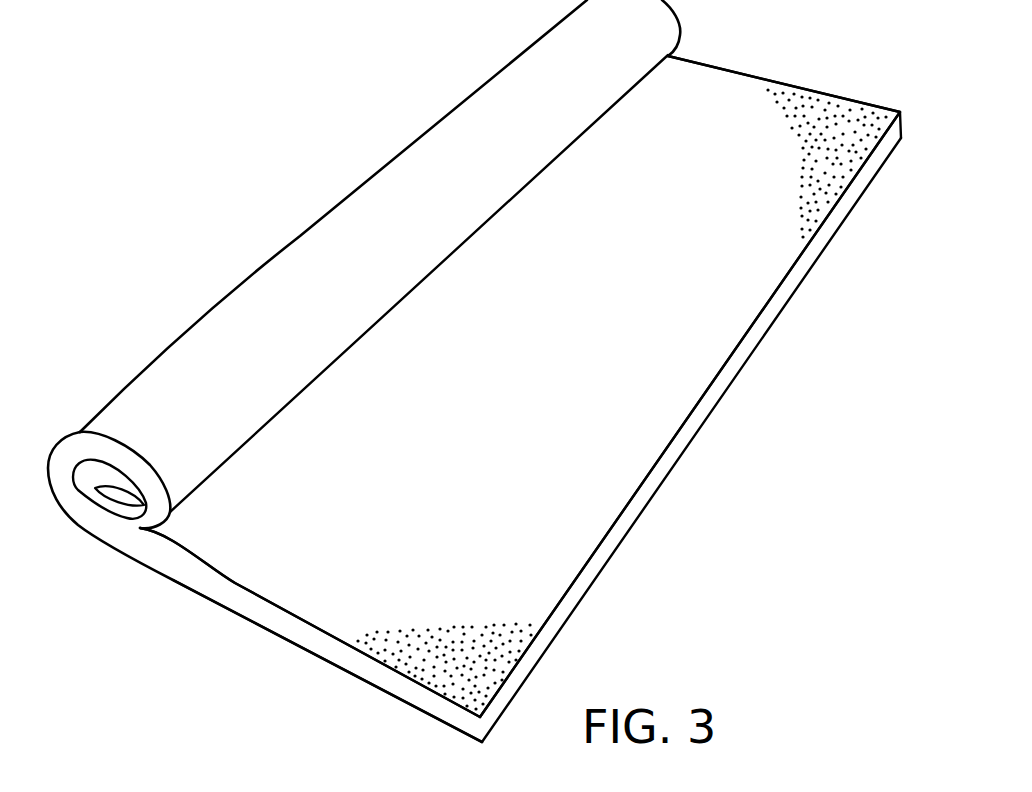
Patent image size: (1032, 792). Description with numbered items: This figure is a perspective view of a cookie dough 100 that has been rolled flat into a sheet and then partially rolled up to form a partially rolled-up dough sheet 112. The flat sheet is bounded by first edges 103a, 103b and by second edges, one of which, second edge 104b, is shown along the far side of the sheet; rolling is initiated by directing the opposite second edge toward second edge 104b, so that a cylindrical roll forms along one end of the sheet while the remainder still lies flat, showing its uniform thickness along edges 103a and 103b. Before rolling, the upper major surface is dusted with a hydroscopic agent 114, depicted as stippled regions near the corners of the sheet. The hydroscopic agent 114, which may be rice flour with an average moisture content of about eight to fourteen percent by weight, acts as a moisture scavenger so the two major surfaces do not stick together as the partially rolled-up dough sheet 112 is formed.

The cookie dough 100 is at (474, 371).
The partially rolled-up dough sheet 112 is at (520, 380).
The first edge 103a is at (243, 605).
The first edge 103b is at (733, 71).
The second edge 104b is at (697, 418).
The hydroscopic agent 114 is at (837, 117).